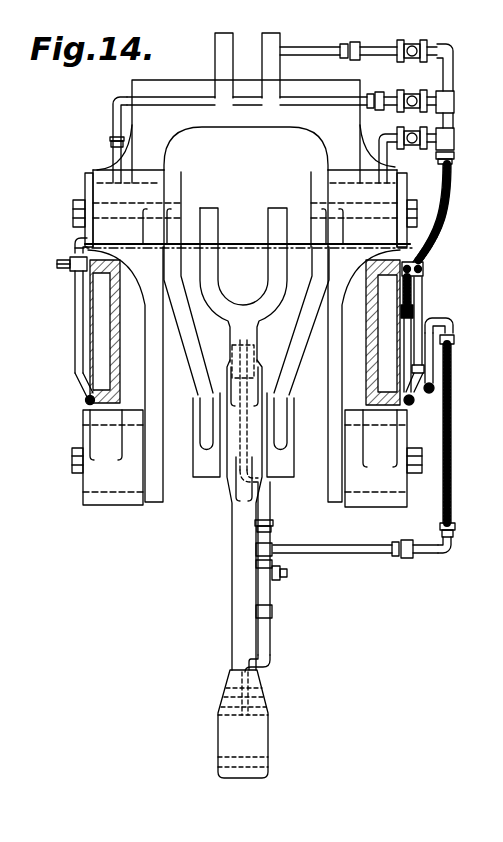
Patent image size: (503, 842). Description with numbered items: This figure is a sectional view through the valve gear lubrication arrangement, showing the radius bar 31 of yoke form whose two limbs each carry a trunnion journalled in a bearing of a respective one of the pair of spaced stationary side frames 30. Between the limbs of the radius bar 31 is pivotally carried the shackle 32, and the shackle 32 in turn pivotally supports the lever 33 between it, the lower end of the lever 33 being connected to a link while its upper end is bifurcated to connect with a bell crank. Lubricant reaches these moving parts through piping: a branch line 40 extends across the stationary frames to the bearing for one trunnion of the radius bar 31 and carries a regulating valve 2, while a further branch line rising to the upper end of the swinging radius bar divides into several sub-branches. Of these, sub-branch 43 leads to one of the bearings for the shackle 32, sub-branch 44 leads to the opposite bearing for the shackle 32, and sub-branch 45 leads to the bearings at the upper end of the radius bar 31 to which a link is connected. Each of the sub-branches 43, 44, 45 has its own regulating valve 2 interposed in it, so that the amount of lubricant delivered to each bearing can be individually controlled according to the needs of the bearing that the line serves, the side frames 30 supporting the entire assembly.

The regulating valve 2 is at (412, 46).
The stationary side frames 30 is at (95, 417).
The radius bar 31 is at (253, 117).
The shackle 32 is at (197, 362).
The lever 33 is at (232, 537).
The second branch line 40 is at (228, 244).
The sub-branch 43 is at (438, 140).
The sub-branch 44 is at (437, 96).
The sub-branch 45 is at (368, 48).